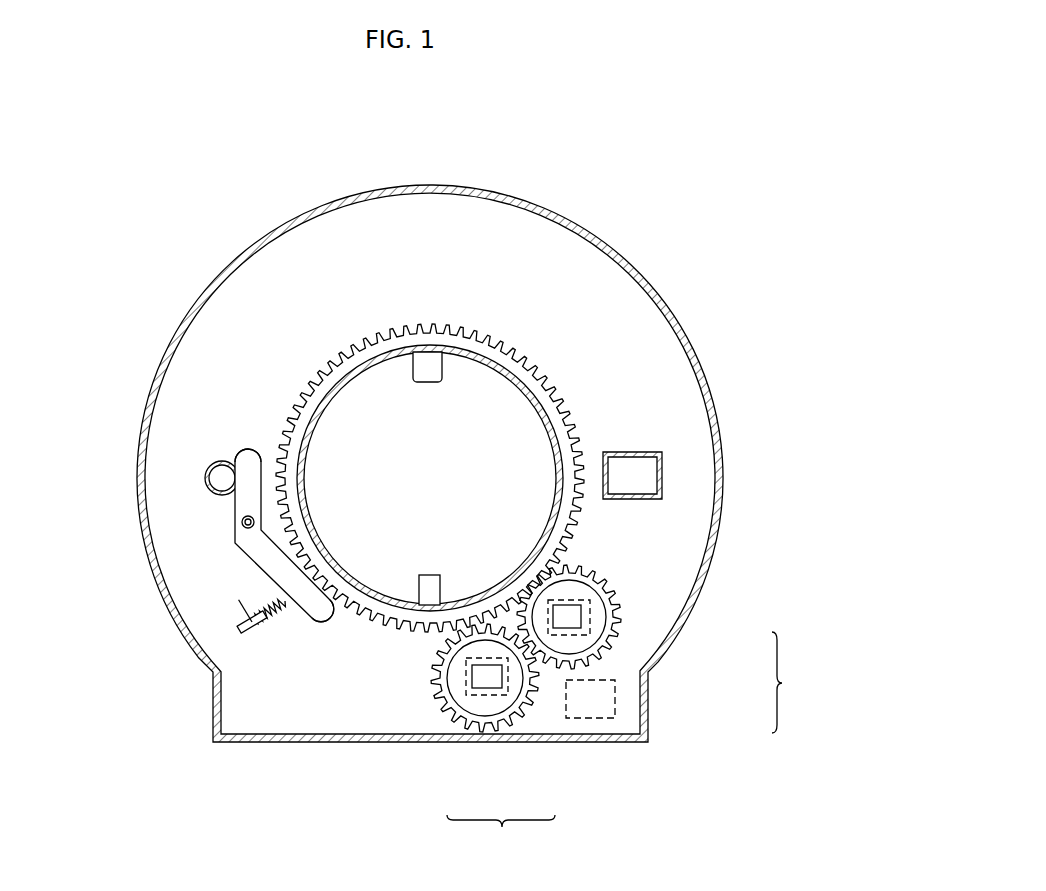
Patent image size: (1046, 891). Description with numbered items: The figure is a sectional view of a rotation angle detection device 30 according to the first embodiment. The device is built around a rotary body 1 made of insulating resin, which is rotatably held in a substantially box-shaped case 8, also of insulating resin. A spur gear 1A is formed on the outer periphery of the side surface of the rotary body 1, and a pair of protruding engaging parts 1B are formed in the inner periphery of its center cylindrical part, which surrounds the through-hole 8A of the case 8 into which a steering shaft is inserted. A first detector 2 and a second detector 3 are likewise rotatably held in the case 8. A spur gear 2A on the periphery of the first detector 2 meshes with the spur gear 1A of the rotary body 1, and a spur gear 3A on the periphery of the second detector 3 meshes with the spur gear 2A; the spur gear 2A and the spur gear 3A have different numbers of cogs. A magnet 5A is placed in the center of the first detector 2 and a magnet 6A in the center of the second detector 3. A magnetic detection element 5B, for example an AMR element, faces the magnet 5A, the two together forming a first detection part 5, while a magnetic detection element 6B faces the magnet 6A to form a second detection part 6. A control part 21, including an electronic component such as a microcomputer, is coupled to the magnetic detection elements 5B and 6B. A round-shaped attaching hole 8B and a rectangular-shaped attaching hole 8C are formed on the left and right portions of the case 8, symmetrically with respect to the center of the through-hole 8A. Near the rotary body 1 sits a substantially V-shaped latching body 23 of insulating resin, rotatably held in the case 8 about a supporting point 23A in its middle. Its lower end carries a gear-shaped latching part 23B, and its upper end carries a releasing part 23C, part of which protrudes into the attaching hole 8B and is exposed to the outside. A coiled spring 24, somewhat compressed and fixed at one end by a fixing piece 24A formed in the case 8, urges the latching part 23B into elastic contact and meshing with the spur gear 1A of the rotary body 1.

The rotary body 1 is at (557, 380).
The spur gear 1A is at (577, 423).
The engaging parts 1B is at (432, 363).
The first detector 2 is at (617, 580).
The spur gear 2A is at (620, 600).
The second detector 3 is at (437, 703).
The spur gear 3A is at (448, 712).
The first detection part 5 is at (788, 682).
The magnet 5A is at (572, 617).
The magnetic detection element 5B is at (573, 637).
The second detection part 6 is at (501, 839).
The magnet 6A is at (483, 684).
The magnetic detection element 6B is at (497, 695).
The case 8 is at (245, 250).
The through-hole 8A is at (370, 437).
The attaching hole 8B is at (217, 478).
The attaching hole 8C is at (648, 472).
The control part 21 is at (590, 707).
The latching body 23 is at (243, 562).
The supporting point 23A is at (244, 524).
The latching part 23B is at (300, 608).
The releasing part 23C is at (245, 463).
The spring 24 is at (244, 620).
The fixing piece 24A is at (250, 620).
The rotation angle detection device 30 is at (628, 243).